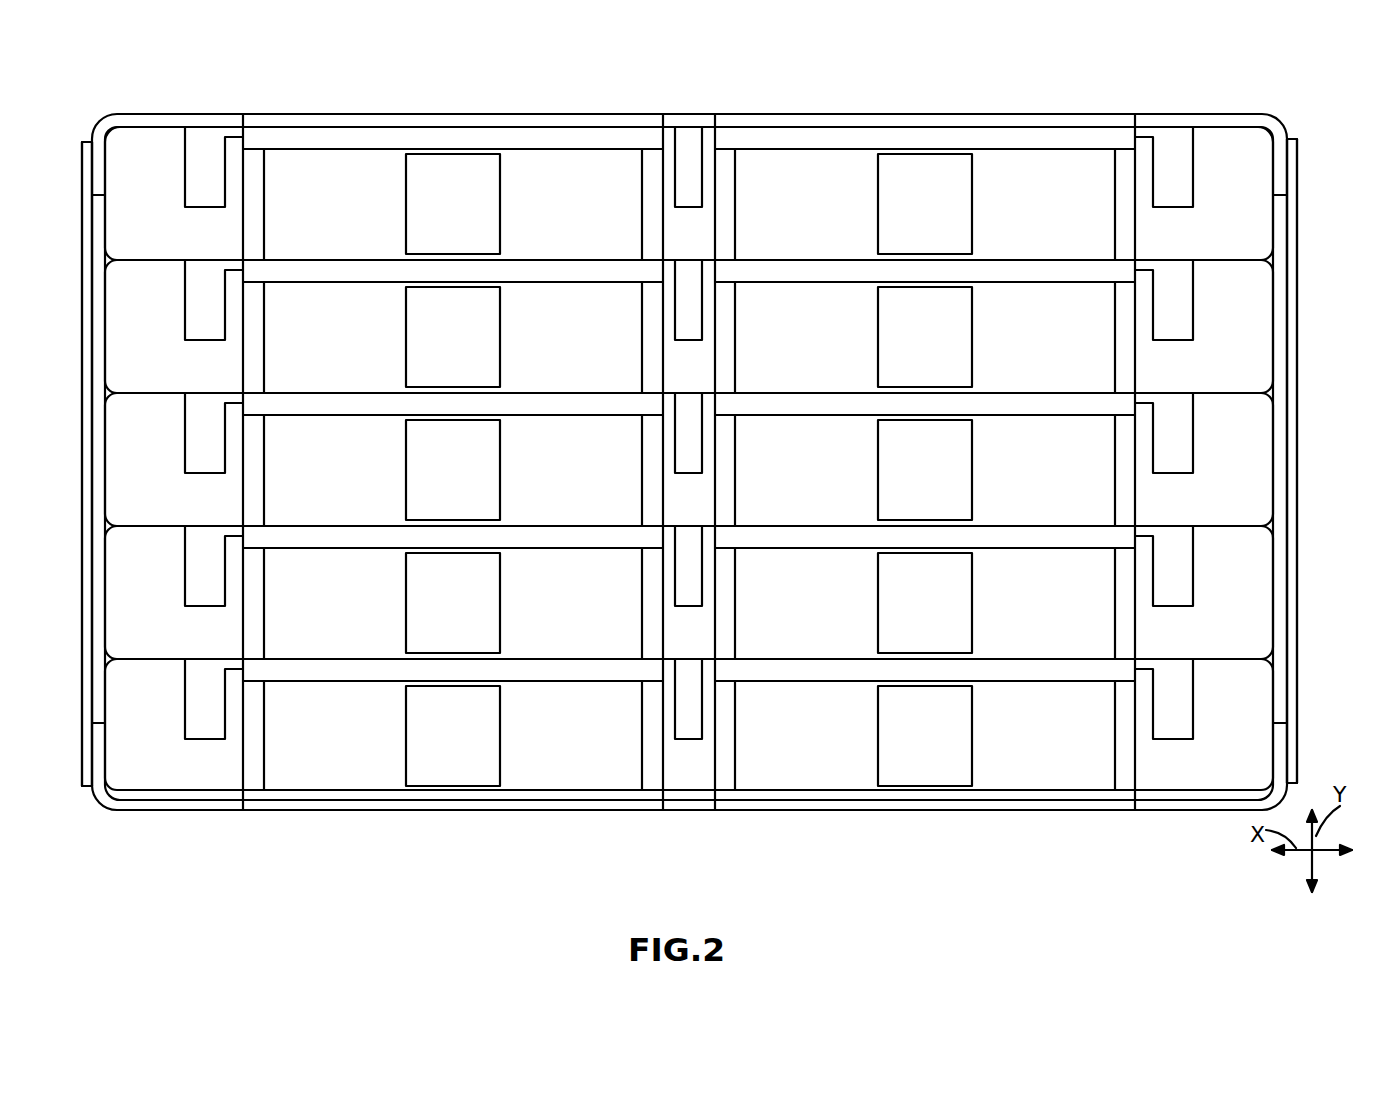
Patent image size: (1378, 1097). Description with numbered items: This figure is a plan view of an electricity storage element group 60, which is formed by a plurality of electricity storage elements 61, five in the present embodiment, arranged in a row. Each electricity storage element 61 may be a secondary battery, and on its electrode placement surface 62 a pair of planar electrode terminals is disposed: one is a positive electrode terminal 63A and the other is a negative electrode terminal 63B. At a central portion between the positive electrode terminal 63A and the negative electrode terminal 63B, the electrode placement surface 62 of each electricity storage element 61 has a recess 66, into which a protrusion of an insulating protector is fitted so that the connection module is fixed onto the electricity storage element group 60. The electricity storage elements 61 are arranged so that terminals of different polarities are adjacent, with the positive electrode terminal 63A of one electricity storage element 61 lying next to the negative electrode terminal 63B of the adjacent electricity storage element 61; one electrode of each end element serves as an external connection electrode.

The electricity storage element group 60 is at (1196, 869).
The electricity storage element 61 is at (1250, 196).
The electrode placement surface 62 is at (1232, 150).
The positive electrode terminal 63A is at (462, 343).
The negative electrode terminal 63B is at (462, 172).
The recess 66 is at (677, 152).